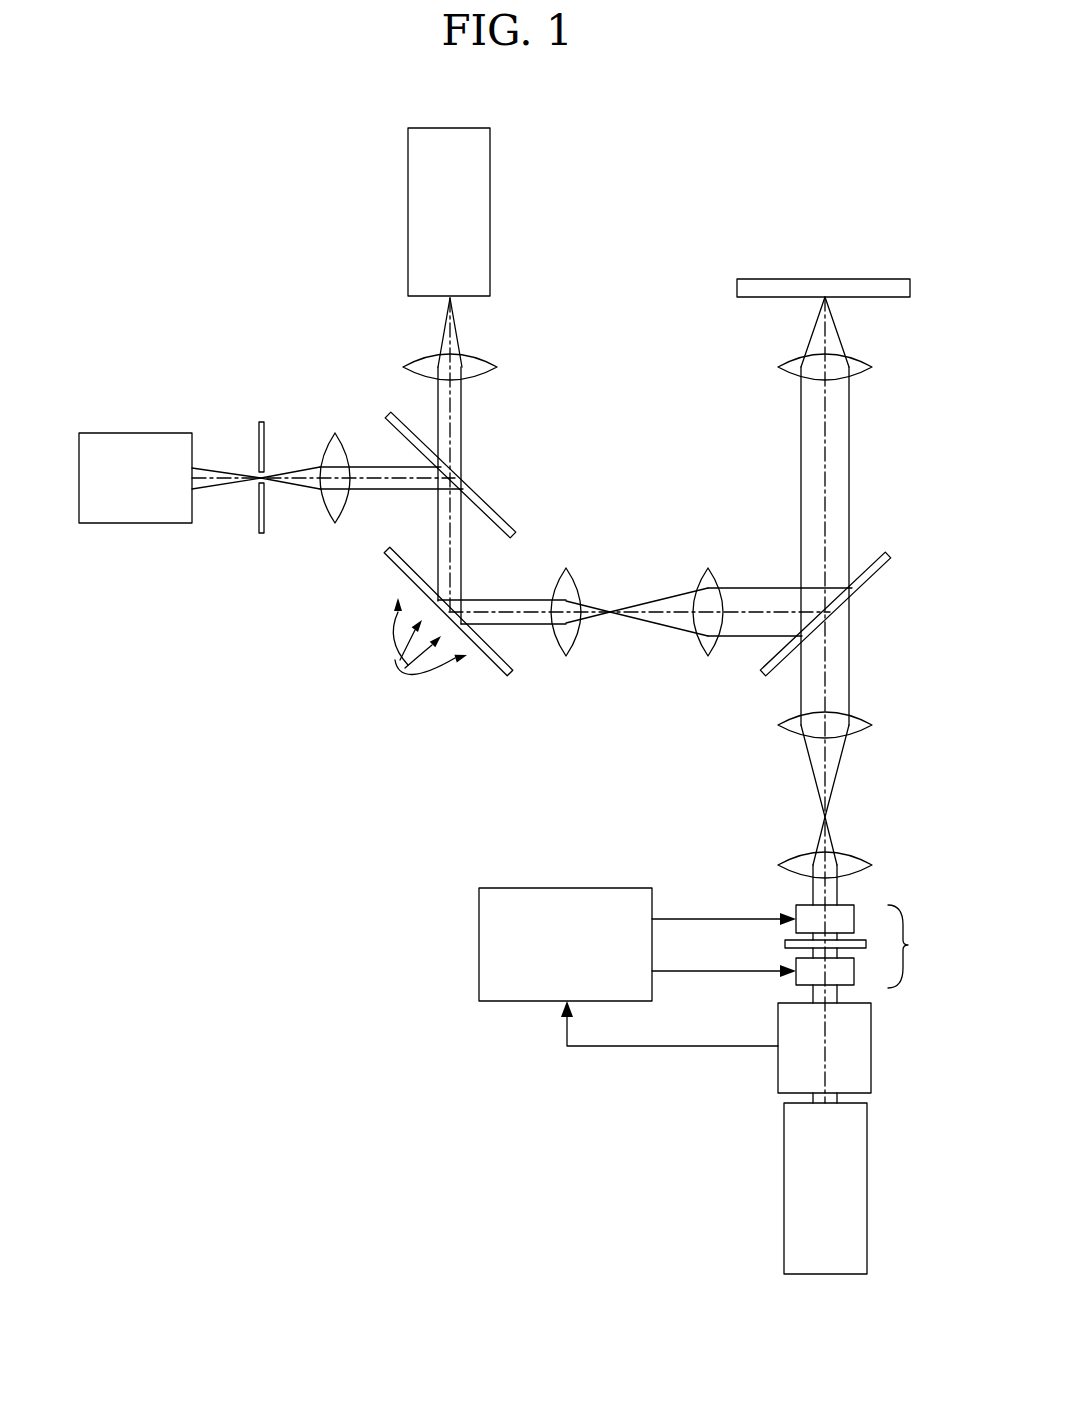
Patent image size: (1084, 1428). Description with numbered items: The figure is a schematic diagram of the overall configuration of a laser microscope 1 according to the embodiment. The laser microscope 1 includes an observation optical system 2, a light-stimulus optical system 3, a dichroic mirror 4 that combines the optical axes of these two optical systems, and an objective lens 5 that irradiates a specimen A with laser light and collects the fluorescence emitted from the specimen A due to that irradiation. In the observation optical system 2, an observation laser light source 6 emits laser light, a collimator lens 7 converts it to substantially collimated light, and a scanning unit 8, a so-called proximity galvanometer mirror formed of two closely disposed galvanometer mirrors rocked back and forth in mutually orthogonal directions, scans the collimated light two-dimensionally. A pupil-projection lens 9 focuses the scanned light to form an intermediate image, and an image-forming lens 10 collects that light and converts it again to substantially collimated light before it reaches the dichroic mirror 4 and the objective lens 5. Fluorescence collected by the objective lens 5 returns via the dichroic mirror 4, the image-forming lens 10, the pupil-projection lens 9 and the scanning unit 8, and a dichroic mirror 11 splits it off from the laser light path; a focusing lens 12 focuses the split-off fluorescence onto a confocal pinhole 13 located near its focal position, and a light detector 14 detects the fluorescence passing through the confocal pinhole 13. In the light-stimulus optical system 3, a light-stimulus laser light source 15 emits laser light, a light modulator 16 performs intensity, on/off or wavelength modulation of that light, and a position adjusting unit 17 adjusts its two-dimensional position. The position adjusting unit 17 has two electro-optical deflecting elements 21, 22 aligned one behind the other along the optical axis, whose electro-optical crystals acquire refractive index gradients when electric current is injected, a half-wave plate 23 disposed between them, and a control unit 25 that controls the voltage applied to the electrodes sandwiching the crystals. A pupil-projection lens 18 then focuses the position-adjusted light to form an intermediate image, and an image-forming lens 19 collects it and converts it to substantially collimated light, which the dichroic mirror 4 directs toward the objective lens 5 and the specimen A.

The laser microscope 1 is at (712, 178).
The observation optical system 2 is at (185, 186).
The light-stimulus optical system 3 is at (558, 1118).
The dichroic mirror 4 is at (870, 578).
The objective lens 5 is at (778, 367).
The observation laser light source 6 is at (490, 211).
The collimator lens 7 is at (497, 367).
The scanning unit 8 is at (490, 663).
The pupil-projection lens 9 is at (566, 657).
The image-forming lens 10 is at (708, 657).
The dichroic mirror 11 is at (493, 510).
The focusing lens 12 is at (333, 432).
The confocal pinhole 13 is at (258, 528).
The light detector 14 is at (152, 433).
The light-stimulus laser light source 15 is at (784, 1188).
The light modulator 16 is at (778, 1073).
The position adjusting unit 17 is at (917, 946).
The pupil-projection lens 18 is at (855, 858).
The image-forming lens 19 is at (862, 730).
The electro-optical deflecting element 21 is at (854, 978).
The electro-optical deflecting element 22 is at (856, 907).
The half-wave plate 23 is at (785, 944).
The control unit 25 is at (560, 888).
The specimen A is at (880, 279).